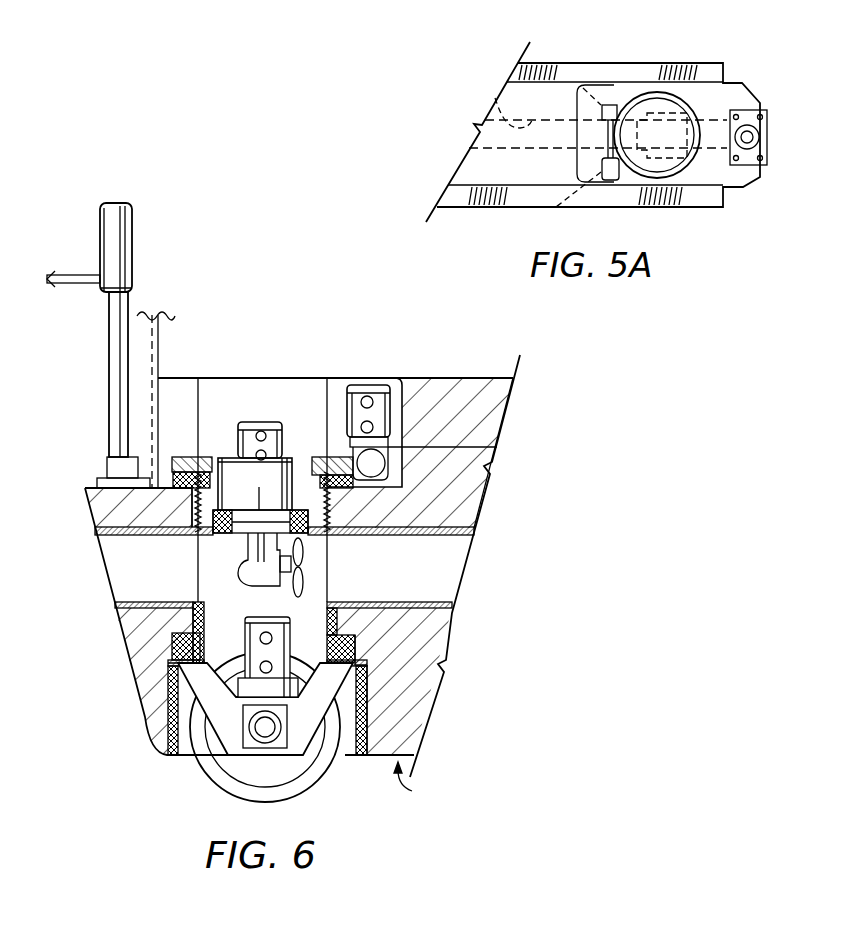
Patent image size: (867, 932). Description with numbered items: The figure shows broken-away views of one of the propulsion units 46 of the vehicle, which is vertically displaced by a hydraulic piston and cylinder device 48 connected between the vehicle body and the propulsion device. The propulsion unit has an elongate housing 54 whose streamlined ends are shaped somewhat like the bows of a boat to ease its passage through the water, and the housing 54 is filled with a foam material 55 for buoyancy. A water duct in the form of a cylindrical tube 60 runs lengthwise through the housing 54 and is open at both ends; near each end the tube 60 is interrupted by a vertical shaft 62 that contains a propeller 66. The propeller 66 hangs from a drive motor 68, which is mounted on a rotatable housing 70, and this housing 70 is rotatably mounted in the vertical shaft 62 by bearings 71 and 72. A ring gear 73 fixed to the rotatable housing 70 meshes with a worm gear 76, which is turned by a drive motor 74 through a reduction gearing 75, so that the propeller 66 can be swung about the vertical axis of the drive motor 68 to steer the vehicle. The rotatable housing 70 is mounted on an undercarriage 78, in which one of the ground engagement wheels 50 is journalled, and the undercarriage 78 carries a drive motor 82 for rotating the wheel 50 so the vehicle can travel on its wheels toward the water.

In FIG. 6, the propulsion unit 46 is at (419, 786).
In FIG. 5A, the hydraulic piston and cylinder device 48 is at (749, 120).
In FIG. 6, the ground engagement wheel 50 is at (317, 777).
In FIG. 5A, the elongate housing 54 is at (482, 168).
In FIG. 6, the elongate housing 54 is at (472, 378).
In FIG. 6, the foam material 55 is at (413, 707).
In FIG. 5A, the cylindrical tube 60 is at (493, 95).
In FIG. 6, the cylindrical tube 60 is at (450, 537).
In FIG. 6, the vertical shaft 62 is at (201, 535).
In FIG. 6, the propeller 66 is at (303, 585).
In FIG. 6, the drive motor 68 is at (249, 430).
In FIG. 6, the rotatable housing 70 is at (327, 535).
In FIG. 6, the bearing 71 is at (185, 488).
In FIG. 6, the bearing 72 is at (170, 647).
In FIG. 5A, the ring gear 73 is at (652, 92).
In FIG. 6, the ring gear 73 is at (201, 457).
In FIG. 6, the drive motor 74 is at (357, 397).
In FIG. 6, the reduction gearing 75 is at (497, 448).
In FIG. 6, the worm gear 76 is at (353, 462).
In FIG. 6, the undercarriage 78 is at (218, 717).
In FIG. 6, the drive motor 82 is at (192, 621).